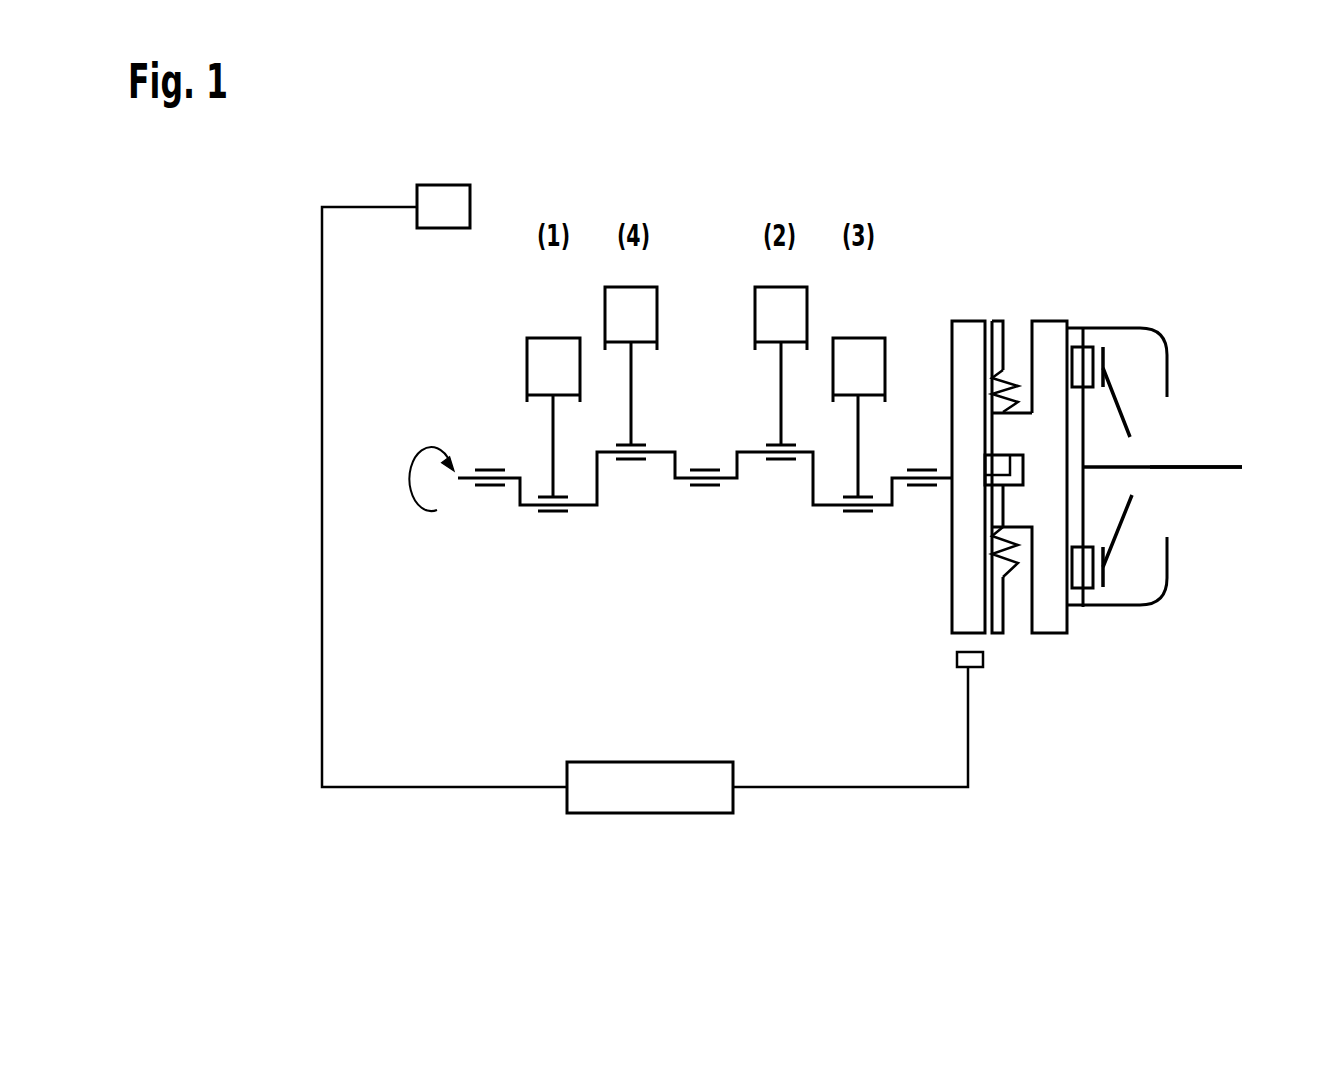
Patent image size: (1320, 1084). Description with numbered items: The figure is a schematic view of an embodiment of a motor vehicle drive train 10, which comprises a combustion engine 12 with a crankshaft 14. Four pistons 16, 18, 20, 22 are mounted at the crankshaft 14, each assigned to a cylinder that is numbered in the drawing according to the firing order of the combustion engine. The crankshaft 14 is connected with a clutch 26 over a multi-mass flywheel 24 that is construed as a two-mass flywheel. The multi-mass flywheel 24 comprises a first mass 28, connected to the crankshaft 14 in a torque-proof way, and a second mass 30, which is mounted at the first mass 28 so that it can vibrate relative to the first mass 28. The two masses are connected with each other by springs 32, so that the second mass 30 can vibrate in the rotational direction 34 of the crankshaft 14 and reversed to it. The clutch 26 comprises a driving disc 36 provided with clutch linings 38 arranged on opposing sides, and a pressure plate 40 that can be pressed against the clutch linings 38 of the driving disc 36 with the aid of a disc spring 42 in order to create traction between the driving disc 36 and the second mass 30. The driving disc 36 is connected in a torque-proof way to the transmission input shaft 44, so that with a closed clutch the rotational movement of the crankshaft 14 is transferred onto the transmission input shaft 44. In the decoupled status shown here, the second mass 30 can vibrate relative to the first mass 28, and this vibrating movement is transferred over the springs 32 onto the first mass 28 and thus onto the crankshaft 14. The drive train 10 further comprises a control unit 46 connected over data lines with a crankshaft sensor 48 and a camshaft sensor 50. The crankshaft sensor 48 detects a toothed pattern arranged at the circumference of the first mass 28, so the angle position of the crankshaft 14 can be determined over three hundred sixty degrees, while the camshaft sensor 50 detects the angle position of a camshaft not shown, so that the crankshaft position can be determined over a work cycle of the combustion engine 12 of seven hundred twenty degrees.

The motor vehicle drive train 10 is at (544, 852).
The combustion engine 12 is at (664, 453).
The crankshaft 14 is at (605, 480).
The piston 16 is at (540, 377).
The piston 18 is at (615, 300).
The piston 20 is at (775, 310).
The piston 22 is at (875, 348).
The multi-mass flywheel 24 is at (1114, 505).
The clutch 26 is at (1177, 572).
The first mass 28 is at (970, 338).
The second mass 30 is at (1048, 337).
The springs 32 is at (1012, 368).
The rotational direction 34 is at (415, 460).
The driving disc 36 is at (1073, 455).
The clutch linings 38 is at (1090, 345).
The pressure plate 40 is at (1110, 352).
The disc spring 42 is at (1130, 427).
The transmission input shaft 44 is at (1193, 468).
The control unit 46 is at (690, 803).
The crankshaft sensor 48 is at (957, 660).
The camshaft sensor 50 is at (437, 222).